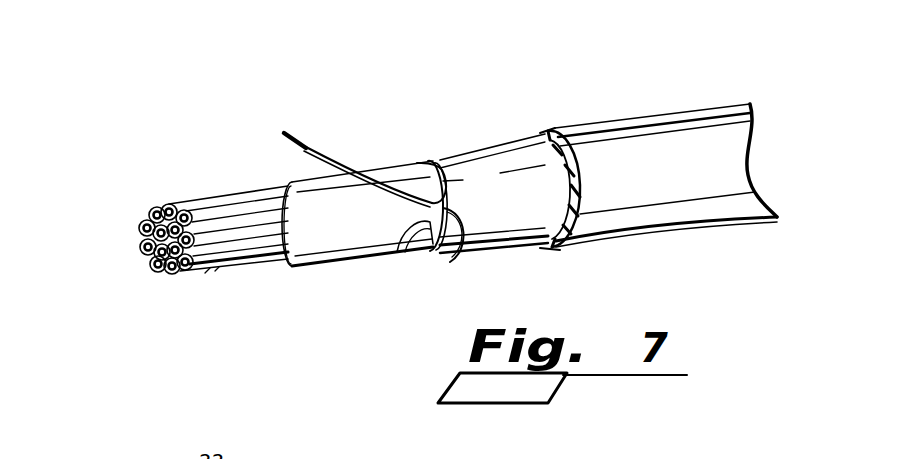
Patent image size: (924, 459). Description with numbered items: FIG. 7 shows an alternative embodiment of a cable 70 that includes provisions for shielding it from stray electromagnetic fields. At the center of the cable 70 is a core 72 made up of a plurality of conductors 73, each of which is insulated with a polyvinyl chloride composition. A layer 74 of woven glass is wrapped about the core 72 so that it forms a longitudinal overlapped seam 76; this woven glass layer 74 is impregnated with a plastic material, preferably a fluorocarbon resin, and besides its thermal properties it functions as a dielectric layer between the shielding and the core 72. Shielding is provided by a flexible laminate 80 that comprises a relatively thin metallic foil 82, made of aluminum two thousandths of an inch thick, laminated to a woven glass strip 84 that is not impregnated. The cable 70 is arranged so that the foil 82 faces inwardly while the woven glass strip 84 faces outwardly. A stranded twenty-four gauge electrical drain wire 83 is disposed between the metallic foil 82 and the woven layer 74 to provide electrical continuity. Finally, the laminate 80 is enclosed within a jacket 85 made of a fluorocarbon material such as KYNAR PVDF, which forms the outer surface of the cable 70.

The cable 70 is at (385, 122).
The core 72 is at (195, 190).
The conductors 73 is at (207, 277).
The layer of woven glass 74 is at (345, 234).
The longitudinal overlapped seam 76 is at (283, 216).
The flexible laminate 80 is at (495, 163).
The metallic foil 82 is at (404, 237).
The electrical drain wire 83 is at (308, 147).
The woven glass strip 84 is at (456, 212).
The jacket 85 is at (661, 197).